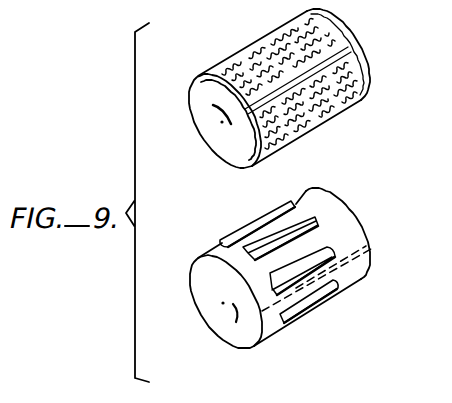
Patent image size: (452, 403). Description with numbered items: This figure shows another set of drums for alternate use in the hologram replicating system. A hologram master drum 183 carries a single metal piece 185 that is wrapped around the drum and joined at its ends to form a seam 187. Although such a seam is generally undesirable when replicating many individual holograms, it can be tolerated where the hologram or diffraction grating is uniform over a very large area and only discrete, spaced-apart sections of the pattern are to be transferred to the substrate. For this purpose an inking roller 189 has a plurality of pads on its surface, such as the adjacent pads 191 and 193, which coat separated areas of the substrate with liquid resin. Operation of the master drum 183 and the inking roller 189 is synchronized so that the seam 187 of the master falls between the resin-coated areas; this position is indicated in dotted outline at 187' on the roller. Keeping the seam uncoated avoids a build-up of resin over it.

The hologram master drum 183 is at (208, 118).
The single metal piece 185 is at (345, 32).
The seam 187 is at (333, 77).
The inking roller 189 is at (181, 298).
The pad 191 is at (350, 221).
The seam position (dotted outline) 187' is at (346, 268).
The pad 193 is at (328, 298).